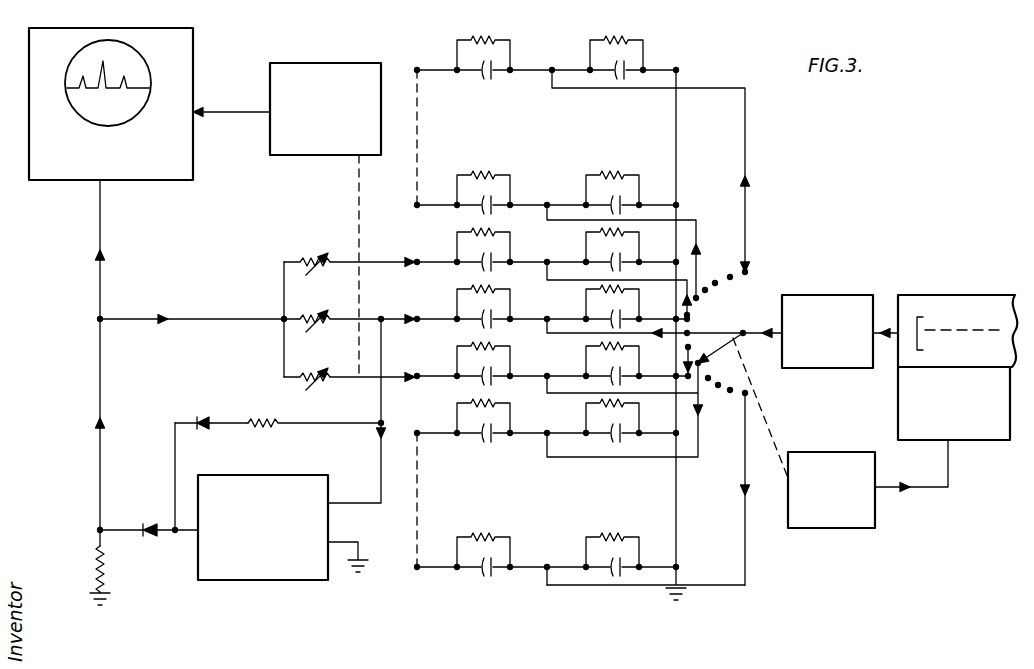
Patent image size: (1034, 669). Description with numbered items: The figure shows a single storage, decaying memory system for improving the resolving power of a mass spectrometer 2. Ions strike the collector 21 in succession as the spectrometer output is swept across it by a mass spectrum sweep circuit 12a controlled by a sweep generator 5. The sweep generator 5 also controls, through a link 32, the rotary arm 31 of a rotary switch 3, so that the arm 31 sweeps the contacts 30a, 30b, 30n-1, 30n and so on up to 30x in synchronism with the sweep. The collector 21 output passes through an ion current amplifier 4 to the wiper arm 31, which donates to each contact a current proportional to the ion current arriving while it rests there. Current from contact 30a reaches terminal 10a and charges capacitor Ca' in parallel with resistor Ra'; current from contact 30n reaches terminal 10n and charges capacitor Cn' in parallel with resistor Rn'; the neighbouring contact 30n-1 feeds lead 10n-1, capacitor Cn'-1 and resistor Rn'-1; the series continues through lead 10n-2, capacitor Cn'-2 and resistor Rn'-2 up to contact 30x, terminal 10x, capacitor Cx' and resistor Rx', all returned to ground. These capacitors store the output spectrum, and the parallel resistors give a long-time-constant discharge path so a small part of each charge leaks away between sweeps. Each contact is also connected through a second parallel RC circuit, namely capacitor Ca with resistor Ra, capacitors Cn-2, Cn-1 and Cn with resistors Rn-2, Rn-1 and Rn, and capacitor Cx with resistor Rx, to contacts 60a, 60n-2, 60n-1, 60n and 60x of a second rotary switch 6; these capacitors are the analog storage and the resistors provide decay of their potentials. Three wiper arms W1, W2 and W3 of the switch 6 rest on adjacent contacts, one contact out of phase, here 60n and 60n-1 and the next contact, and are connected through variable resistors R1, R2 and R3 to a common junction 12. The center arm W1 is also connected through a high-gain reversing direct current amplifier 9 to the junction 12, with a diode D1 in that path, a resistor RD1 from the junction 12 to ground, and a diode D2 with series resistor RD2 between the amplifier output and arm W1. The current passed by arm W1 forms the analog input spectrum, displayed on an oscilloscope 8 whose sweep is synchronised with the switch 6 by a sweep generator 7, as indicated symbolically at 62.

The mass spectrometer 2 is at (915, 294).
The rotary switch 3 is at (746, 330).
The ion current amplifier 4 is at (861, 297).
The sweep generator 5 is at (849, 451).
The rotary switch 6 is at (372, 350).
The sweep generator 7 is at (272, 157).
The oscilloscope 8 is at (194, 78).
The amplifier 9 is at (238, 475).
The common junction 12 is at (106, 312).
The sweep circuit 12a is at (898, 448).
The collector 21 is at (922, 349).
The rotary wiper arm 31 is at (730, 343).
The link 32 is at (773, 440).
The synchronising connection 62 is at (358, 212).
The switch contact 60a is at (415, 70).
The switch contact 60n-2 is at (417, 205).
The switch contact 60n-1 is at (417, 262).
The switch contact 60n is at (440, 306).
The switch contact 60x is at (418, 568).
The terminal 10a is at (547, 75).
The lead 10n-2 is at (553, 192).
The lead 10n-1 is at (618, 290).
The terminal 10n is at (547, 318).
The terminal 10x is at (647, 489).
The switch contact 30a is at (752, 266).
The switch contact 30b is at (734, 276).
The switch contact 30n-1 is at (688, 316).
The switch contact 30n is at (693, 326).
The switch contact 30x is at (742, 400).
The variable resistor R1 is at (349, 308).
The variable resistor R2 is at (349, 251).
The variable resistor R3 is at (349, 366).
The center wiper arm W1 is at (406, 318).
The wiper arm W2 is at (406, 261).
The wiper arm W3 is at (410, 376).
The diode D1 is at (152, 519).
The diode D2 is at (201, 411).
The resistor RD1 is at (124, 575).
The series resistor RD2 is at (252, 400).
The resistor Ra is at (501, 46).
The analog storage capacitor Ca is at (479, 83).
The resistor Ra' is at (641, 46).
The capacitor Ca' is at (618, 88).
The resistor Rn-2 is at (500, 160).
The analog storage capacitor Cn-2 is at (511, 214).
The resistor Rn'-2 is at (619, 173).
The capacitor Cn'-2 is at (671, 198).
The resistor Rn-1 is at (471, 233).
The analog storage capacitor Cn-1 is at (511, 270).
The resistor Rn'-1 is at (584, 246).
The capacitor Cn'-1 is at (707, 239).
The resistor Rn is at (468, 295).
The analog storage capacitor Cn is at (502, 328).
The resistor Rn' is at (597, 300).
The capacitor Cn' is at (640, 310).
The resistor Rx is at (484, 539).
The analog storage capacitor Cx is at (484, 582).
The resistor Rx' is at (613, 539).
The capacitor Cx' is at (605, 589).